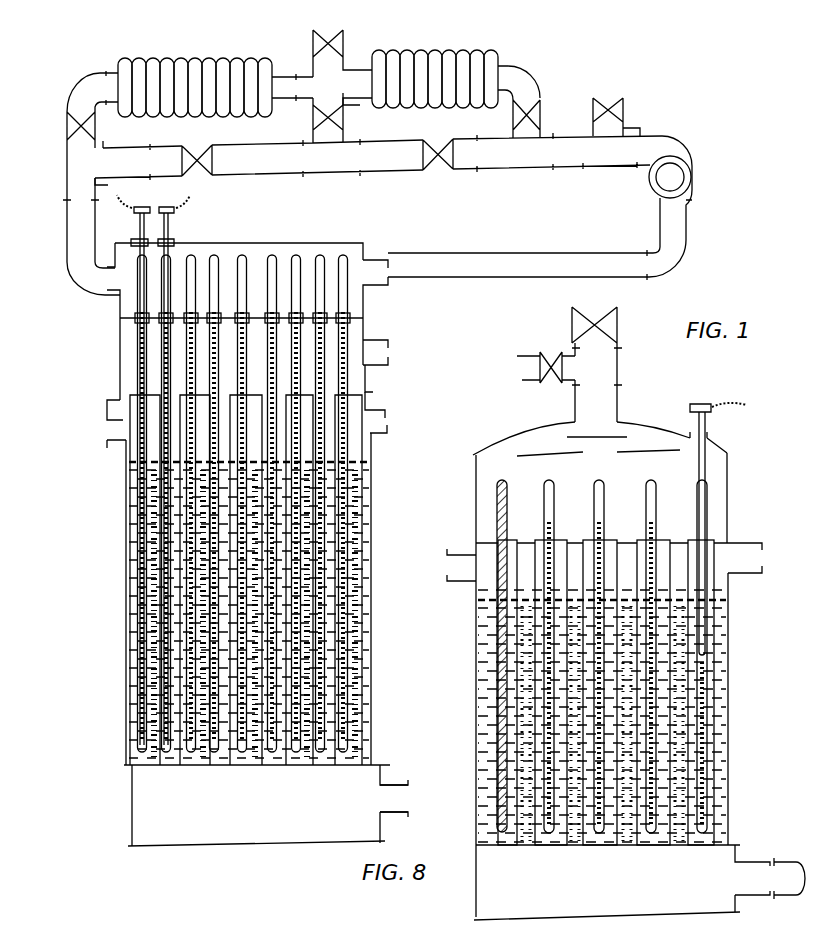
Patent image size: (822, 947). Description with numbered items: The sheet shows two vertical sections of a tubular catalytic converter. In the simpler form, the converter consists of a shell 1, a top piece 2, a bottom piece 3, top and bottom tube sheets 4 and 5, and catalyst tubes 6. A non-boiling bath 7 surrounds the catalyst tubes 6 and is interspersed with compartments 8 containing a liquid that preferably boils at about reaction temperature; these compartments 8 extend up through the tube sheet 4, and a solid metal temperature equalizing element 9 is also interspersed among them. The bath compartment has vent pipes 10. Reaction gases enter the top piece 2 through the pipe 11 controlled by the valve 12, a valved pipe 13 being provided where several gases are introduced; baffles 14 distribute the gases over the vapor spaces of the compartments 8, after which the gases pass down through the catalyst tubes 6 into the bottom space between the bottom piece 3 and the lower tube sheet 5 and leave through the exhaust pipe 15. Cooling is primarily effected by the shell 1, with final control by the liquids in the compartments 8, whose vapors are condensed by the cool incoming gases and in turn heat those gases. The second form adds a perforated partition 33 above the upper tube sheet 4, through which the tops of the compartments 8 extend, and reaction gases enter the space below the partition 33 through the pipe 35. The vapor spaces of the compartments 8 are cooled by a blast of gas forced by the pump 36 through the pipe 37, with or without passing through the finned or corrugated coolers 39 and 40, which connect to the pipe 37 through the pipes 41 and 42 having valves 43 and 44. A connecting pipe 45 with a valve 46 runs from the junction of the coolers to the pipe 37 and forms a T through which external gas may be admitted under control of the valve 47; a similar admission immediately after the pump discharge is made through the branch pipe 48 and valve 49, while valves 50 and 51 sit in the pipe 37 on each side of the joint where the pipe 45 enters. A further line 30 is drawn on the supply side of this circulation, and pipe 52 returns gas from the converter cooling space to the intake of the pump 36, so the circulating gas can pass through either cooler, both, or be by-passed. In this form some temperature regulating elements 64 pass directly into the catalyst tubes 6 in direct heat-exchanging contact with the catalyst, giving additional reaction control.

In FIG. 8, the shell 1 is at (375, 516).
In FIG. 1, the shell 1 is at (733, 636).
In FIG. 8, the top piece 2 is at (350, 243).
In FIG. 1, the top piece 2 is at (632, 424).
In FIG. 8, the bottom piece 3 is at (270, 850).
In FIG. 1, the bottom piece 3 is at (652, 916).
In FIG. 1, the top tube sheet 4 is at (727, 539).
In FIG. 8, the bottom tube sheet 5 is at (378, 765).
In FIG. 1, the bottom tube sheet 5 is at (735, 845).
In FIG. 8, the catalyst tubes 6 is at (347, 645).
In FIG. 1, the catalyst tubes 6 is at (688, 734).
In FIG. 8, the non-boiling bath 7 is at (372, 573).
In FIG. 1, the non-boiling bath 7 is at (733, 688).
In FIG. 1, the compartments 8 is at (655, 511).
In FIG. 1, the solid metal temperature equalizing element 9 is at (498, 581).
In FIG. 8, the vent pipes 10 is at (383, 427).
In FIG. 1, the vent pipes 10 is at (752, 564).
In FIG. 1, the pipe 11 is at (573, 403).
In FIG. 1, the valve 12 is at (615, 326).
In FIG. 1, the valved pipe 13 is at (522, 358).
In FIG. 1, the baffles 14 is at (560, 457).
In FIG. 8, the exhaust pipe 15 is at (398, 802).
In FIG. 1, the exhaust pipe 15 is at (758, 862).
In FIG. 8, the supply pipe 30 is at (67, 230).
In FIG. 8, the perforated partition 33 is at (372, 318).
In FIG. 8, the pipe 35 is at (386, 355).
In FIG. 8, the pump 36 is at (677, 179).
In FIG. 8, the pipe 37 is at (485, 178).
In FIG. 8, the finned or corrugated pipe 39 is at (432, 58).
In FIG. 8, the finned or corrugated pipe 40 is at (205, 62).
In FIG. 8, the pipe 41 is at (530, 88).
In FIG. 8, the pipe 42 is at (88, 95).
In FIG. 8, the valve 43 is at (540, 115).
In FIG. 8, the valve 44 is at (67, 128).
In FIG. 8, the connecting pipe 45 is at (349, 97).
In FIG. 8, the valve 46 is at (312, 121).
In FIG. 8, the valve 47 is at (345, 43).
In FIG. 8, the branch pipe 48 is at (622, 129).
In FIG. 8, the valve 49 is at (610, 100).
In FIG. 8, the valve 50 is at (437, 175).
In FIG. 8, the valve 51 is at (188, 146).
In FIG. 8, the pipe 52 is at (598, 253).
In FIG. 8, the temperature regulating elements 64 is at (168, 258).